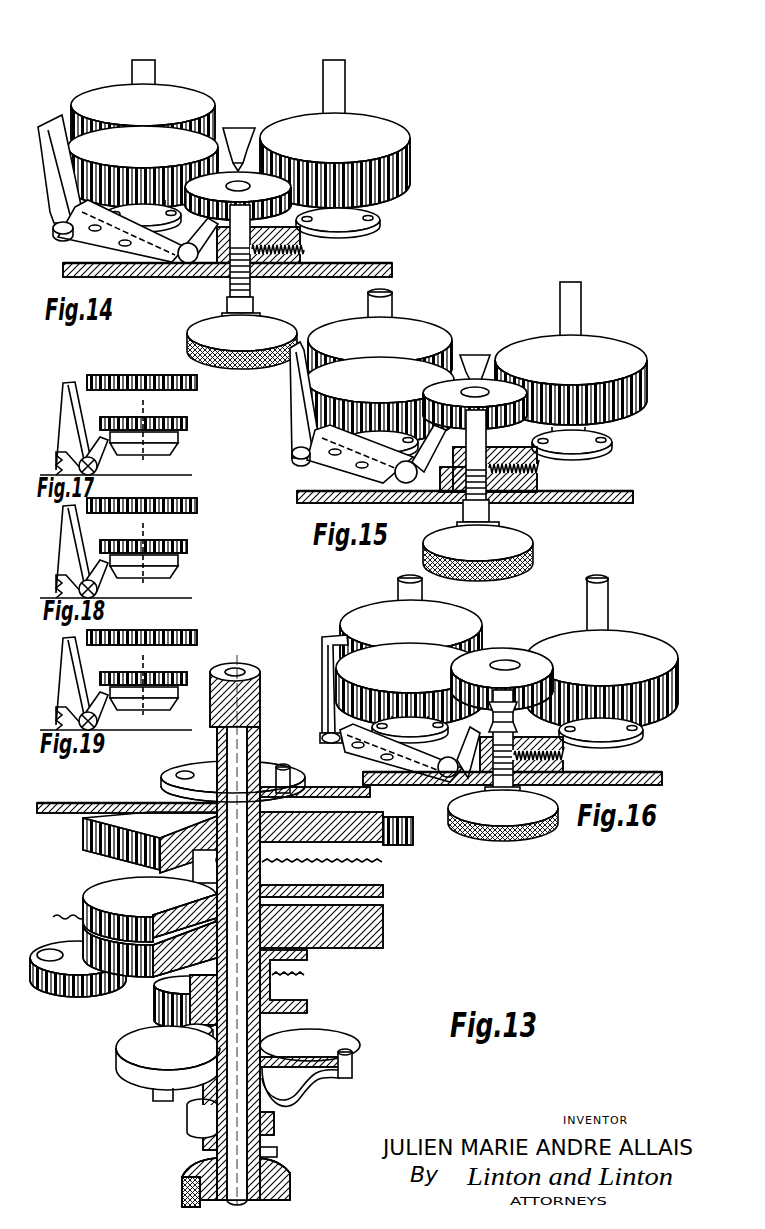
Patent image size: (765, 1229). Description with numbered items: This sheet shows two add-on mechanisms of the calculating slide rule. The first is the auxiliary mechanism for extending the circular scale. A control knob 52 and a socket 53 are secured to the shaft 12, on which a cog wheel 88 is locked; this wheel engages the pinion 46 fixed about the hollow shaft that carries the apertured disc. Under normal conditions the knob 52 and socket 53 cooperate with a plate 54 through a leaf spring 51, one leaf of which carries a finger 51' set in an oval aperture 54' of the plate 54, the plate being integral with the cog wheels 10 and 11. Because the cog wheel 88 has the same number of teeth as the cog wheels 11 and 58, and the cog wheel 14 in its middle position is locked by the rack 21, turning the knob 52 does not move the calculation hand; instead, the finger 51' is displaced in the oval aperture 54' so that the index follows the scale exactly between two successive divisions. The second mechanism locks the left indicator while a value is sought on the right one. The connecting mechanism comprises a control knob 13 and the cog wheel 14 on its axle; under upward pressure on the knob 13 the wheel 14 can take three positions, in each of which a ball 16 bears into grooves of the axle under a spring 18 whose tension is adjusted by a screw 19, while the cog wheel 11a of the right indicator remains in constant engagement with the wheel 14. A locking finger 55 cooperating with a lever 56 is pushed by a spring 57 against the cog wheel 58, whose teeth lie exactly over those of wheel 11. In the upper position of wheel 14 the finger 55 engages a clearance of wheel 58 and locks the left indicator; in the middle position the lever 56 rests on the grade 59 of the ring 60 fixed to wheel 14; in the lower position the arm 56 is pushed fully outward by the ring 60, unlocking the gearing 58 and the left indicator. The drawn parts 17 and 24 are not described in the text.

In FIG. 13, the cog wheel 10 is at (187, 1002).
In FIG. 14, the cog wheel 11 is at (143, 179).
In FIG. 15, the cog wheel 11 is at (380, 408).
In FIG. 16, the cog wheel 11 is at (410, 693).
In FIG. 13, the cog wheel 11 is at (128, 940).
In FIG. 14, the cog wheel 11a is at (382, 124).
In FIG. 15, the cog wheel 11a is at (628, 358).
In FIG. 16, the cog wheel 11a is at (633, 637).
In FIG. 13, the shaft 12 is at (162, 779).
In FIG. 14, the control knob 13 is at (190, 333).
In FIG. 15, the control knob 13 is at (520, 541).
In FIG. 16, the control knob 13 is at (480, 814).
In FIG. 14, the cog wheel 14 is at (238, 195).
In FIG. 15, the cog wheel 14 is at (475, 404).
In FIG. 16, the cog wheel 14 is at (502, 679).
In FIG. 17, the cog wheel 14 is at (188, 424).
In FIG. 13, the cog wheel 14 is at (78, 969).
In FIG. 14, the ball 16 is at (267, 270).
In FIG. 15, the ball 16 is at (500, 497).
In FIG. 16, the ball 16 is at (527, 793).
In FIG. 14, the threaded shaft 17 is at (228, 279).
In FIG. 15, the threaded shaft 17 is at (463, 501).
In FIG. 16, the threaded shaft 17 is at (503, 827).
In FIG. 14, the spring 18 is at (288, 273).
In FIG. 15, the spring 18 is at (550, 498).
In FIG. 16, the spring 18 is at (528, 748).
In FIG. 14, the screw 19 is at (307, 250).
In FIG. 15, the screw 19 is at (542, 473).
In FIG. 16, the screw 19 is at (567, 762).
In FIG. 14, the rack 21 is at (237, 127).
In FIG. 15, the rack 21 is at (477, 354).
In FIG. 16, the rack 21 is at (501, 648).
In FIG. 13, the pinion 24 is at (240, 668).
In FIG. 13, the pinion 46 is at (390, 846).
In FIG. 13, the leaf spring 51 is at (186, 1128).
In FIG. 13, the finger 51' is at (319, 1088).
In FIG. 13, the control knob 52 is at (290, 1190).
In FIG. 13, the socket 53 is at (275, 1128).
In FIG. 13, the plate 54 is at (168, 1062).
In FIG. 13, the oval aperture 54' is at (330, 1046).
In FIG. 14, the locking finger 55 is at (53, 163).
In FIG. 15, the locking finger 55 is at (297, 404).
In FIG. 16, the locking finger 55 is at (324, 688).
In FIG. 17, the locking finger 55 is at (64, 413).
In FIG. 14, the lever 56 is at (170, 260).
In FIG. 15, the lever 56 is at (407, 482).
In FIG. 16, the lever 56 is at (437, 774).
In FIG. 14, the spring 57 is at (58, 237).
In FIG. 15, the spring 57 is at (297, 464).
In FIG. 16, the spring 57 is at (324, 740).
In FIG. 17, the spring 57 is at (56, 464).
In FIG. 14, the cog wheel 58 is at (82, 98).
In FIG. 15, the cog wheel 58 is at (404, 330).
In FIG. 16, the cog wheel 58 is at (362, 615).
In FIG. 17, the cog wheel 58 is at (118, 374).
In FIG. 13, the cog wheel 58 is at (84, 887).
In FIG. 17, the grade 59 is at (170, 452).
In FIG. 18, the grade 59 is at (155, 562).
In FIG. 19, the grade 59 is at (149, 688).
In FIG. 17, the ring 60 is at (178, 440).
In FIG. 18, the ring 60 is at (164, 561).
In FIG. 19, the ring 60 is at (159, 679).
In FIG. 13, the cog wheel 88 is at (82, 840).